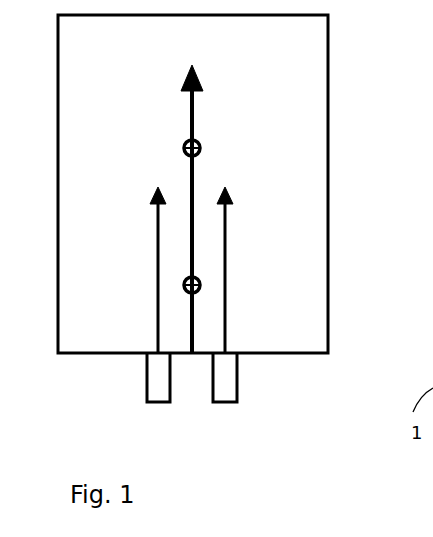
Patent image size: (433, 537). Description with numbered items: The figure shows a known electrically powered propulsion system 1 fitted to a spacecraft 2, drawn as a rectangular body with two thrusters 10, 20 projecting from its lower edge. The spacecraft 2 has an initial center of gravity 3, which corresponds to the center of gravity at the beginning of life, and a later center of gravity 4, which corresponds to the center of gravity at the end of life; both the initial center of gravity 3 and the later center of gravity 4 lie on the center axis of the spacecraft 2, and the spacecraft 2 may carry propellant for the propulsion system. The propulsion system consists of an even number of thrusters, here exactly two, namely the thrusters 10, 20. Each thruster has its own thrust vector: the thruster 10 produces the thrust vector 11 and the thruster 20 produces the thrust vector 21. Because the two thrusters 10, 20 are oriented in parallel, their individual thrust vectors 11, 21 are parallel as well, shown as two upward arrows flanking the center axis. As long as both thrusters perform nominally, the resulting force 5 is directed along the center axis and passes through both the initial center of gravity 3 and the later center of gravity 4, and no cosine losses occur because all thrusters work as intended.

The electrically powered propulsion system 1 is at (122, 378).
The spacecraft 2 is at (328, 152).
The initial center of gravity 3 is at (195, 276).
The later center of gravity 4 is at (205, 150).
The resulting force 5 is at (195, 115).
The EP thruster 10 is at (158, 405).
The thrust vector 11 is at (157, 269).
The EP thruster 20 is at (225, 405).
The thrust vector 21 is at (227, 232).